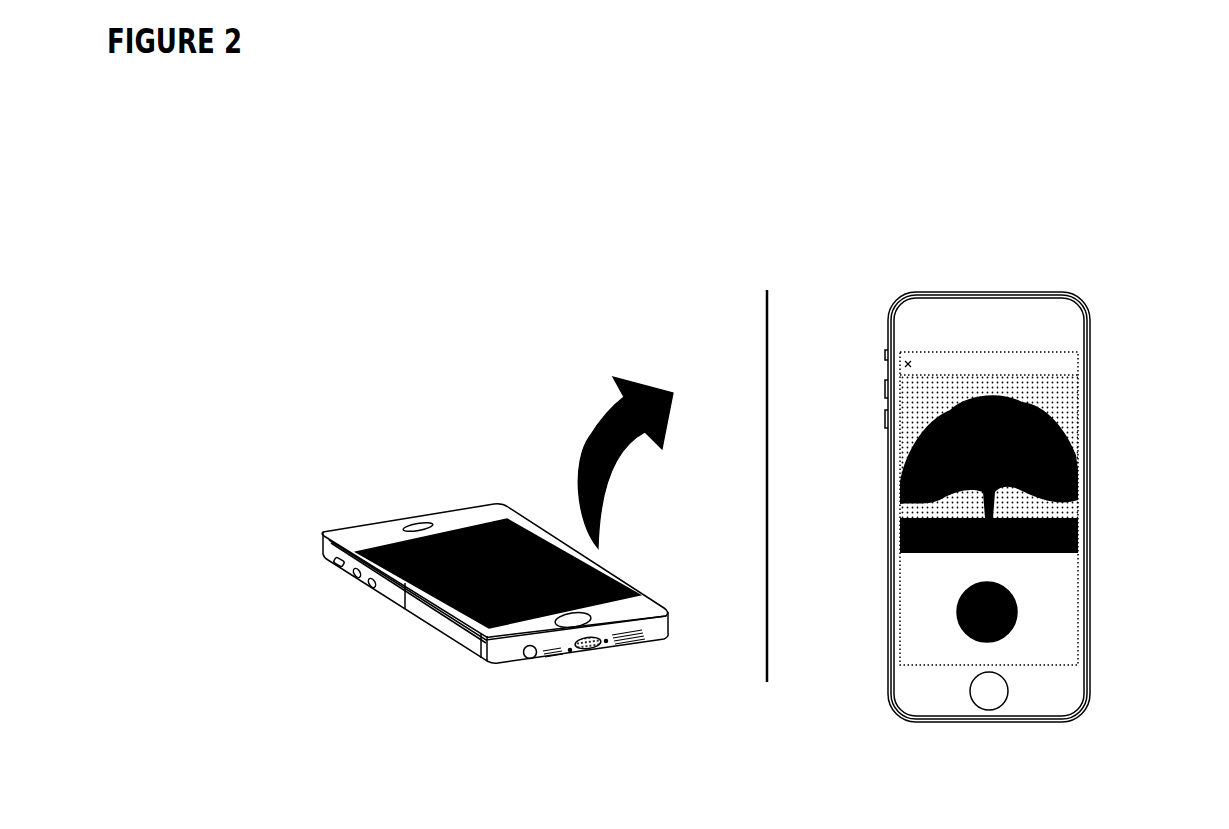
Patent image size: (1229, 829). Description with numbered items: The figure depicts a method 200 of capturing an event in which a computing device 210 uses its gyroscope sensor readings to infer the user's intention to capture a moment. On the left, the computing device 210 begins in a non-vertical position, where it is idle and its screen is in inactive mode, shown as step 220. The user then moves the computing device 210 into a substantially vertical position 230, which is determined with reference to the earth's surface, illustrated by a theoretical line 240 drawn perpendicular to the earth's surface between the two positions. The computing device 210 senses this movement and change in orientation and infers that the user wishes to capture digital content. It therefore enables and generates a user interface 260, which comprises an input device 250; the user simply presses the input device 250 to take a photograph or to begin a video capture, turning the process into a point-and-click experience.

The method 200 is at (642, 79).
The computing device 210 is at (543, 720).
The step 220 is at (327, 424).
The substantially vertical position 230 is at (932, 206).
The theoretical line 240 is at (787, 255).
The input device 250 is at (1050, 612).
The user interface 260 is at (1088, 577).